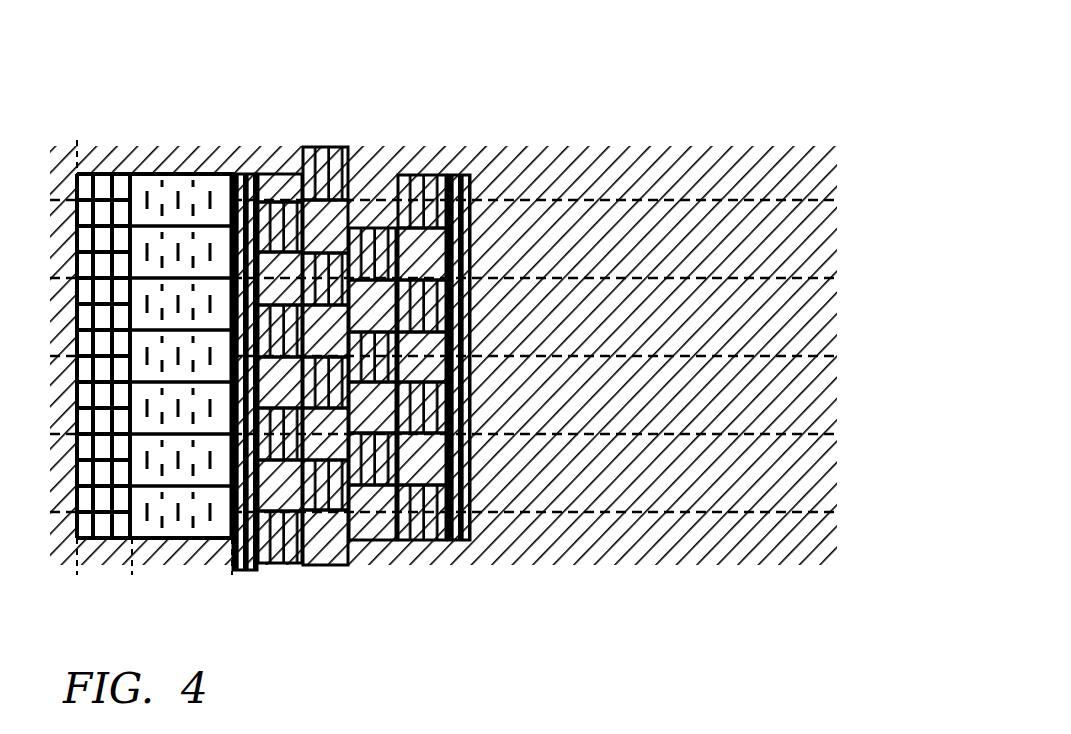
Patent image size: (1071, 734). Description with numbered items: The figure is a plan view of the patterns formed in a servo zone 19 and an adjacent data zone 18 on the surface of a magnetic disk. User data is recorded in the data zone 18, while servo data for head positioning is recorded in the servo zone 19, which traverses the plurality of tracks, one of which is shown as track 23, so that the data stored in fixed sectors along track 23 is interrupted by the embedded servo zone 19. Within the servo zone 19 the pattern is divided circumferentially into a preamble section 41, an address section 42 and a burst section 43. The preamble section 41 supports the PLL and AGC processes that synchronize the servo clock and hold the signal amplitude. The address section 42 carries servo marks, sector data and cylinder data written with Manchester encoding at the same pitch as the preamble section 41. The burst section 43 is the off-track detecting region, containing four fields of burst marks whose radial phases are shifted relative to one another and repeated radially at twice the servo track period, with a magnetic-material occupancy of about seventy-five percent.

The data zone 18 is at (840, 100).
The servo zone 19 is at (602, 120).
The track 23 is at (830, 205).
The preamble section 41 is at (132, 572).
The address section 42 is at (232, 572).
The burst section 43 is at (443, 578).